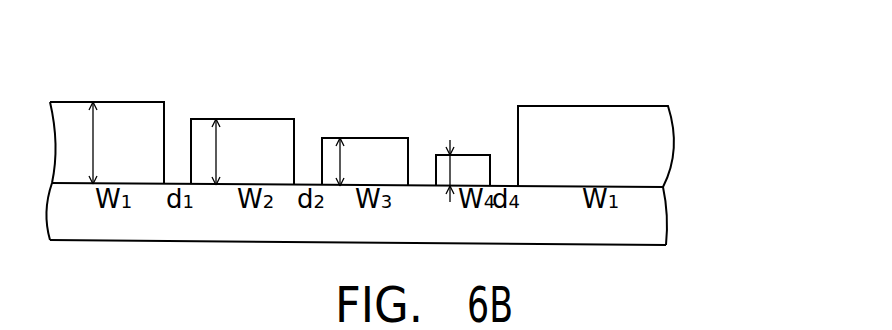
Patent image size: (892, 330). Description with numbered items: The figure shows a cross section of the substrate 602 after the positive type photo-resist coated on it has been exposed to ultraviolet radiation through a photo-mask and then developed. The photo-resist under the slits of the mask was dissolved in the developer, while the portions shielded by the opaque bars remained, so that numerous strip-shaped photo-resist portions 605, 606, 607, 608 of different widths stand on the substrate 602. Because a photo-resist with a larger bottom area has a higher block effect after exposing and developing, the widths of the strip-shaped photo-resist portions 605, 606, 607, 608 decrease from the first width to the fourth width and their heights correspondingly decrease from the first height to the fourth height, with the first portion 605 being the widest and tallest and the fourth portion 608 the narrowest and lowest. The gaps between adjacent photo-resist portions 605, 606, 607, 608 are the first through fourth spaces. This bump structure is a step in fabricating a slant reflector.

The substrate 602 is at (657, 220).
The strip-shaped photo-resist portion 605 is at (133, 110).
The strip-shaped photo-resist portion 606 is at (260, 133).
The strip-shaped photo-resist portion 607 is at (380, 148).
The strip-shaped photo-resist portion 608 is at (472, 158).